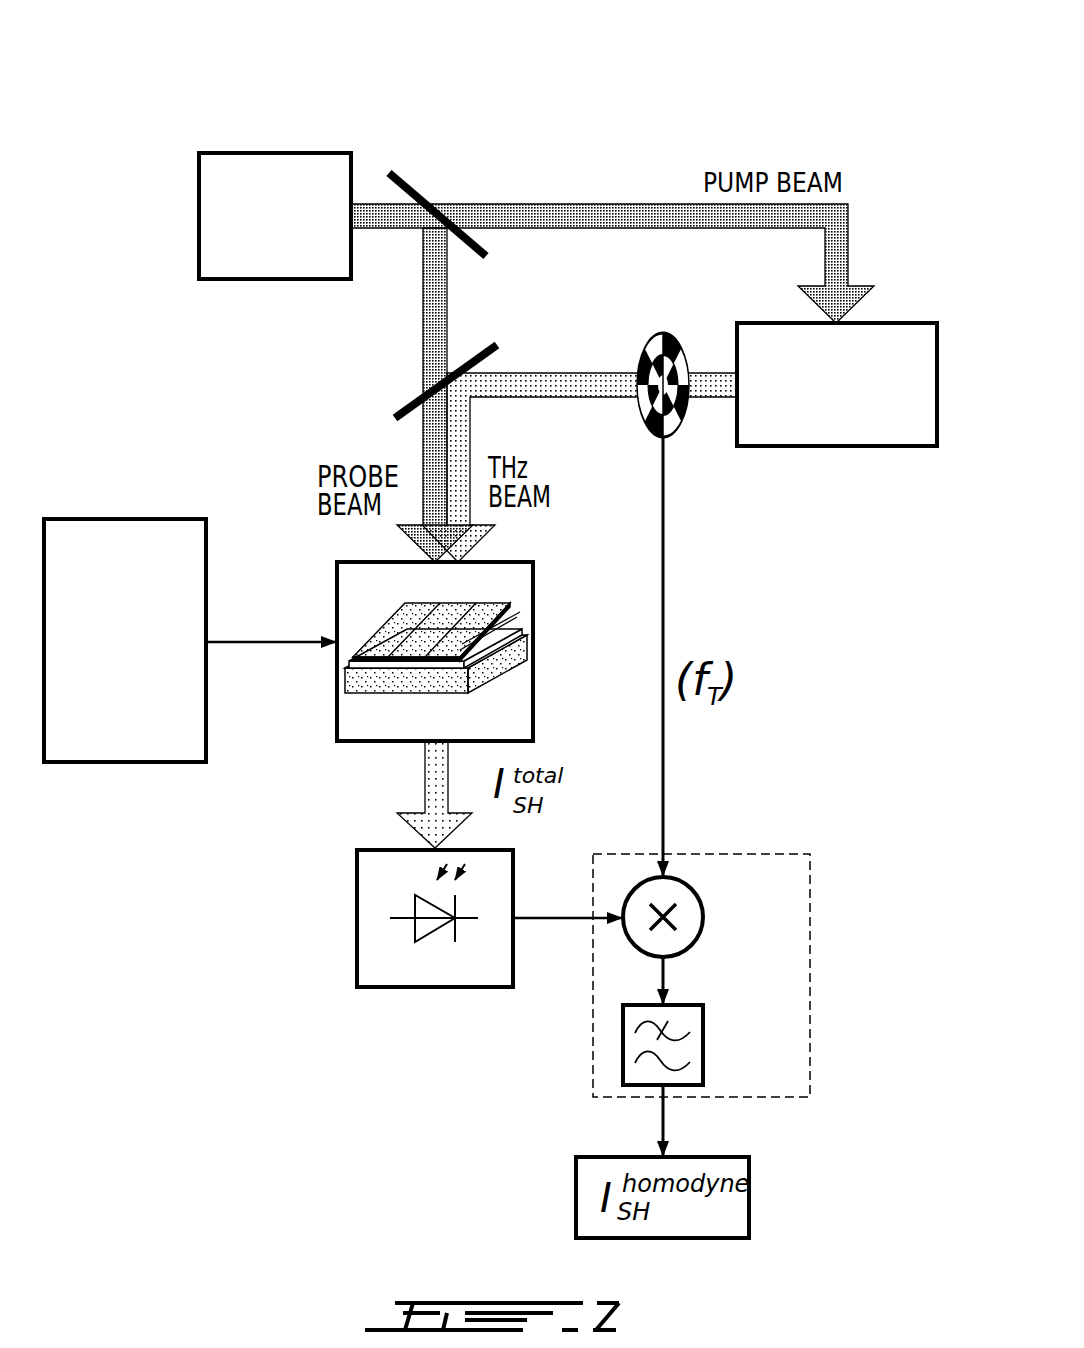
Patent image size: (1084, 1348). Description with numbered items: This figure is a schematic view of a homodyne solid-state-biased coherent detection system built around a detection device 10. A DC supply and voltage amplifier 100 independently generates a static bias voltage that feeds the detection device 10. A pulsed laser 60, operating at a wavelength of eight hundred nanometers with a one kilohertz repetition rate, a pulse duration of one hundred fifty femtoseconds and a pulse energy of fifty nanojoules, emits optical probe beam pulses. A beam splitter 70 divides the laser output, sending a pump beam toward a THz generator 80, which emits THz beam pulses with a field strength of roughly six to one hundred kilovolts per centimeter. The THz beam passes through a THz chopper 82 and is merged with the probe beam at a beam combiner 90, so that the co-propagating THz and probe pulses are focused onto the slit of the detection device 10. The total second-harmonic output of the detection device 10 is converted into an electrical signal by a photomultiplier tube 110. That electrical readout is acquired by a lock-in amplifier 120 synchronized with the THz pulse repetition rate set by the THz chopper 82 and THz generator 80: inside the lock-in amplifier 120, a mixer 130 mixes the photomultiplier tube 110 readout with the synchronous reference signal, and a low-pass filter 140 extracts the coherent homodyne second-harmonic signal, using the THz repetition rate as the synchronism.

The detection device 10 is at (382, 744).
The pulsed laser 60 is at (276, 151).
The beam splitter 70 is at (411, 178).
The THz generator 80 is at (914, 321).
The THz chopper 82 is at (684, 429).
The beam combiner 90 is at (499, 343).
The DC supply and voltage amplifier 100 is at (123, 765).
The photomultiplier tube 110 is at (433, 990).
The lock-in amplifier 120 is at (794, 851).
The mixer 130 is at (690, 881).
The low-pass filter 140 is at (621, 1047).